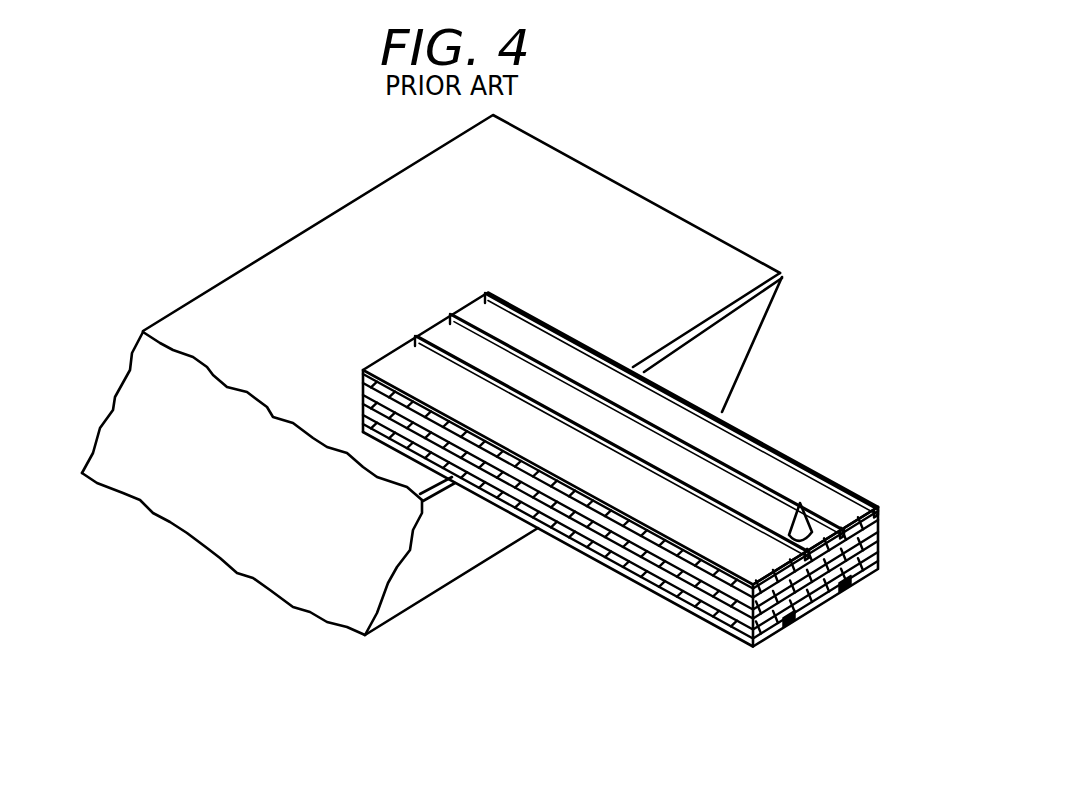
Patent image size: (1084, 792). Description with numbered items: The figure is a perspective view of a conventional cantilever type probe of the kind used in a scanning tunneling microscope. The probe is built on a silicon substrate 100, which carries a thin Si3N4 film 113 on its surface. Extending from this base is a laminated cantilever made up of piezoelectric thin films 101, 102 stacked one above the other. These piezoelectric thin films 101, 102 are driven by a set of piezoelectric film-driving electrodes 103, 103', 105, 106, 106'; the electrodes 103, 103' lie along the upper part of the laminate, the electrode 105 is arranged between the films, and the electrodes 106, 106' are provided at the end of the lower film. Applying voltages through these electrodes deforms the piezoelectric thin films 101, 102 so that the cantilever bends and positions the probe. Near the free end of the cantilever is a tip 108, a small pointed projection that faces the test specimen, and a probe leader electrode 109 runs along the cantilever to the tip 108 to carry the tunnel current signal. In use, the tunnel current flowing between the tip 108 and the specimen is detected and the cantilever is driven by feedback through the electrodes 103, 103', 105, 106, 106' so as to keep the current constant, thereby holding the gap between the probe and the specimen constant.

The silicon substrate 100 is at (742, 340).
The thin Si3N4 film 113 is at (780, 273).
The piezoelectric film-driving electrode 103 is at (620, 456).
The piezoelectric film-driving electrode 103' is at (827, 508).
The probe leader electrode 109 is at (727, 495).
The tip 108 is at (808, 520).
The piezoelectric thin film 102 is at (880, 522).
The piezoelectric film-driving electrode 105 is at (880, 540).
The piezoelectric thin film 101 is at (882, 553).
The piezoelectric film-driving electrode 106 is at (808, 646).
The piezoelectric film-driving electrode 106' is at (877, 602).